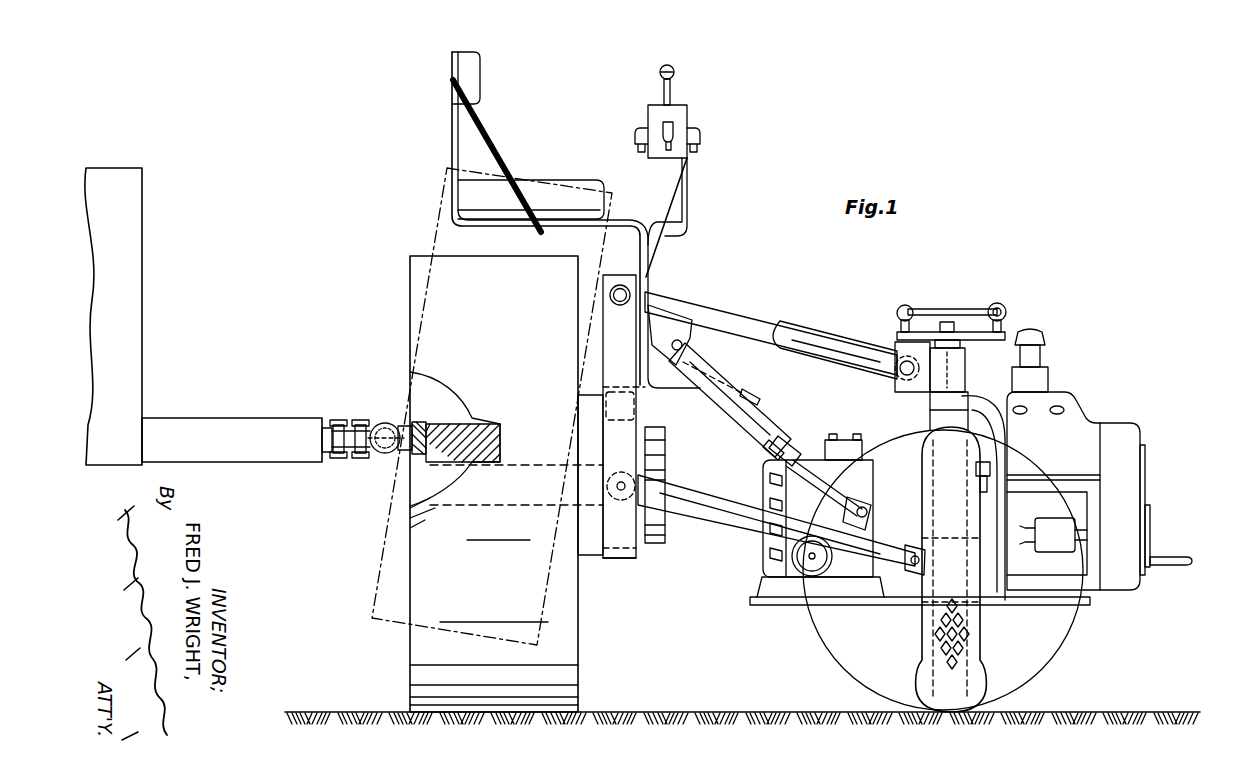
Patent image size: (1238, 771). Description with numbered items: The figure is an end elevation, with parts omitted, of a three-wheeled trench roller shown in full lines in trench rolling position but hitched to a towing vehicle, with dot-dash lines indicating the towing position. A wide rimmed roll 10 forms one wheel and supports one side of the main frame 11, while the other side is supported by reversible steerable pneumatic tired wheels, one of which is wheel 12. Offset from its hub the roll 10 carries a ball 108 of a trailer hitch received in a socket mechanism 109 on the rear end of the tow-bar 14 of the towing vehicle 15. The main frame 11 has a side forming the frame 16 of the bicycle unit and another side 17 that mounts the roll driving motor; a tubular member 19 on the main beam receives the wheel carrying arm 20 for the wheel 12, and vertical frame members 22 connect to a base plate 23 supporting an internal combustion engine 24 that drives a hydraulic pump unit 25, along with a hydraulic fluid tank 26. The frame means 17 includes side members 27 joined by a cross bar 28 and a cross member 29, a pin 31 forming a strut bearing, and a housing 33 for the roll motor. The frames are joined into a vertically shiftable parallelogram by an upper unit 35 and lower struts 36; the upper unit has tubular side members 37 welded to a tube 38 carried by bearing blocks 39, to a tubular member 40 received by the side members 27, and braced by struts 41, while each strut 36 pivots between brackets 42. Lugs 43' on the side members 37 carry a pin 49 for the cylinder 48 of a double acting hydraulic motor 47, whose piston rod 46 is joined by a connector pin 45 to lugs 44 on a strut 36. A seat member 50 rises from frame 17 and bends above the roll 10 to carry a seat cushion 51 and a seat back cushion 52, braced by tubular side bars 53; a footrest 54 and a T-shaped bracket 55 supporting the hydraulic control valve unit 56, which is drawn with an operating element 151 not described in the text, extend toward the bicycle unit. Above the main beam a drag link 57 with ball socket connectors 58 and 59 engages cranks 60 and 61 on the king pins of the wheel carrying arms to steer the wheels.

The wide rimmed roll 10 is at (415, 285).
The main frame 11 is at (767, 312).
The pneumatic tired wheel 12 is at (986, 646).
The tow-bar 14 is at (252, 423).
The towing vehicle 15 is at (134, 271).
The frame of the bicycle unit 16 is at (925, 410).
The support or frame means 17 is at (625, 335).
The tubular member 19 is at (958, 374).
The wheel carrying arm 20 is at (996, 438).
The vertical frame member 22 is at (946, 422).
The base plate 23 is at (1040, 603).
The internal combustion engine 24 is at (1086, 424).
The hydraulic pump unit 25 is at (822, 456).
The tank 26 is at (765, 463).
The side member 27 is at (632, 528).
The cross bar 28 is at (626, 560).
The cross member 29 is at (636, 416).
The pin 31 is at (621, 492).
The supporting unit or housing 33 is at (657, 450).
The upper unit 35 is at (731, 303).
The lower strut 36 is at (712, 516).
The tubular side member 37 is at (741, 318).
The tube 38 is at (896, 350).
The bearing block 39 is at (900, 390).
The tubular member 40 is at (634, 286).
The tubular bracing strut 41 is at (841, 346).
The bracket 42 is at (913, 603).
The downwardly extending bracket, ear or lug 43' is at (692, 322).
The upwardly extending bracket, ear or lug 44 is at (808, 582).
The bearing or connector pin 45 is at (866, 505).
The piston rod 46 is at (806, 467).
The hydraulic piston motor 47 is at (770, 407).
The cylinder 48 is at (714, 376).
The pin 49 is at (683, 345).
The seat member 50 is at (452, 136).
The seat cushion 51 is at (572, 184).
The seat back cushion 52 is at (474, 80).
The tubular side bar or brace 53 is at (498, 150).
The footrest 54 is at (691, 383).
The bracket 55 is at (685, 196).
The hydraulic control valve unit 56 is at (645, 117).
The drag link 57 is at (975, 309).
The ball socket connector 58 is at (1004, 308).
The ball socket connector 59 is at (908, 306).
The lever or crank 60 is at (990, 336).
The lever or crank 61 is at (898, 333).
The ball 108 is at (386, 454).
The socket mechanism 109 is at (352, 420).
The switch knob 151 is at (670, 94).